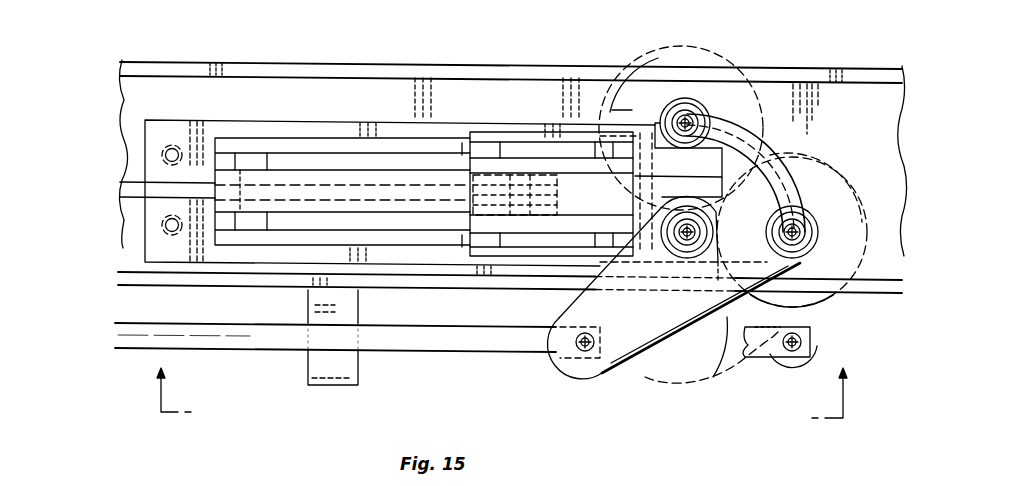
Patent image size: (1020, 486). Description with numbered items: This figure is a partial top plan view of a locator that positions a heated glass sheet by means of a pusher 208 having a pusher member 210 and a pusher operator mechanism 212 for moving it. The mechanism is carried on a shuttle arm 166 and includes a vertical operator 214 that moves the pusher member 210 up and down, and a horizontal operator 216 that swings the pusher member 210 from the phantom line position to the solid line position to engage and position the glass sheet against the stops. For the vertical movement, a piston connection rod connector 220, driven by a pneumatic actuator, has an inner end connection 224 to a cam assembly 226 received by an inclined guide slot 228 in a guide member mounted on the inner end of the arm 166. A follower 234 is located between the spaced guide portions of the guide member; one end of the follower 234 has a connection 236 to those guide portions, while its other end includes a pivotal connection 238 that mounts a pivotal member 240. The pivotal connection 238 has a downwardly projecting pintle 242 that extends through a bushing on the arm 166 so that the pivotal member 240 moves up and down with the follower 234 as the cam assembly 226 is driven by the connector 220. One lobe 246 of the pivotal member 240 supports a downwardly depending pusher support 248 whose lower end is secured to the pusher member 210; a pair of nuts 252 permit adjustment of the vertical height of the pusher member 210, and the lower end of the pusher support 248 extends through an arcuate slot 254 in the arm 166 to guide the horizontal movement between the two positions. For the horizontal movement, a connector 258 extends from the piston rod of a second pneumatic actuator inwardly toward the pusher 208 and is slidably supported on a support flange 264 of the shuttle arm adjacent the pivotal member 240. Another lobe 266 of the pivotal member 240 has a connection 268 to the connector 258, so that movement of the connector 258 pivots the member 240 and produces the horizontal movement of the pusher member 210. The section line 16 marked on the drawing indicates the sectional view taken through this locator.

The section line 16- 16 is at (509, 409).
The arm 166 is at (130, 258).
The pusher 208 is at (473, 362).
The pusher member 210 is at (732, 49).
The pusher operator mechanism 212 is at (300, 362).
The vertical operator 214 is at (137, 181).
The horizontal operator 216 is at (132, 349).
The piston connection rod connector 220 is at (134, 197).
The inner end connection 224 is at (500, 172).
The cam assembly 226 is at (605, 234).
The inclined guide slot 228 is at (537, 195).
The follower 234 is at (342, 172).
The connection 236 is at (233, 157).
The pivotal connection 238 is at (664, 247).
The pivotal member 240 is at (684, 335).
The pintle 242 is at (691, 250).
The lobe 246 is at (813, 200).
The pusher support 248 is at (690, 112).
The nuts 252 is at (632, 108).
The arcuate slot 254 is at (778, 130).
The connector 258 is at (250, 340).
The support flange 264 is at (342, 364).
The lobe 266 is at (583, 364).
The connection 268 is at (560, 363).